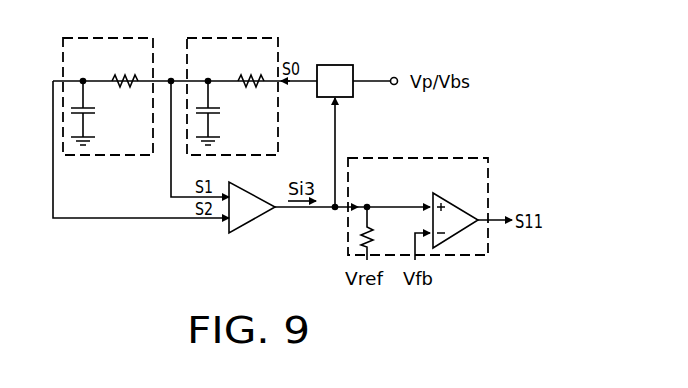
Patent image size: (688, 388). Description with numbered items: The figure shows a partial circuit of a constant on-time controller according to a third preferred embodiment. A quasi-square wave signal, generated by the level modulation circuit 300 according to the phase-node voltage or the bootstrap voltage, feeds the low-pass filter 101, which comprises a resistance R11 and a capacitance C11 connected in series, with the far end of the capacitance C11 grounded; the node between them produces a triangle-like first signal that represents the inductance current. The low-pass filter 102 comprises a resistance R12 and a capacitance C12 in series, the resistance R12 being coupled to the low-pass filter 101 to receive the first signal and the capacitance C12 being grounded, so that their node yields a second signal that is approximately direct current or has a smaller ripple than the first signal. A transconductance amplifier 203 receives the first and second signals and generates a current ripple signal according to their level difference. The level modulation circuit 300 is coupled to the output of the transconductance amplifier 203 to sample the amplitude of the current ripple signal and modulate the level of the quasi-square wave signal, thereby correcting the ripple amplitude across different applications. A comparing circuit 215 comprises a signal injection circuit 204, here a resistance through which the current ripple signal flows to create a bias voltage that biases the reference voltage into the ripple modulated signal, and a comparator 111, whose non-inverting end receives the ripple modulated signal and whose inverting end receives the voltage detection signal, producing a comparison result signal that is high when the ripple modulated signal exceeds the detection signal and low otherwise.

The low-pass filter 102 is at (108, 83).
The low-pass filter 101 is at (232, 83).
The resistance R12 is at (127, 65).
The capacitance C12 is at (100, 113).
The resistance R11 is at (252, 65).
The capacitance C11 is at (225, 113).
The level modulation circuit 300 is at (347, 91).
The transconductance amplifier 203 is at (257, 218).
The comparing circuit 215 is at (418, 189).
The signal injection circuit 204 is at (393, 222).
The comparator 111 is at (451, 237).